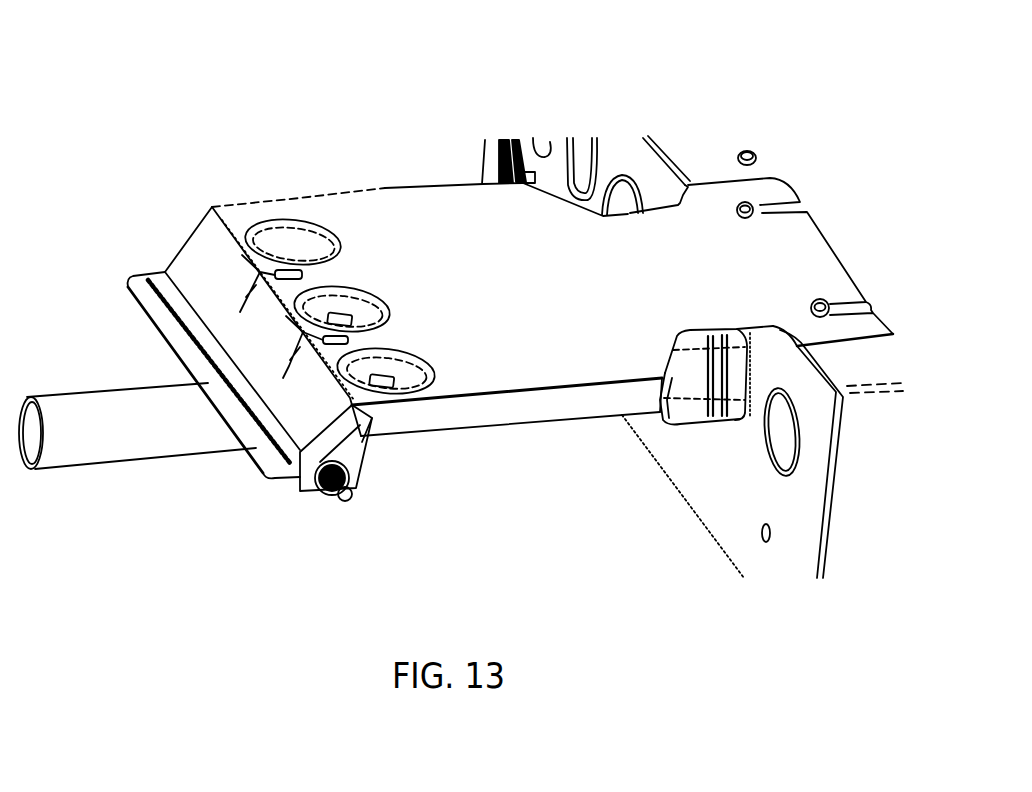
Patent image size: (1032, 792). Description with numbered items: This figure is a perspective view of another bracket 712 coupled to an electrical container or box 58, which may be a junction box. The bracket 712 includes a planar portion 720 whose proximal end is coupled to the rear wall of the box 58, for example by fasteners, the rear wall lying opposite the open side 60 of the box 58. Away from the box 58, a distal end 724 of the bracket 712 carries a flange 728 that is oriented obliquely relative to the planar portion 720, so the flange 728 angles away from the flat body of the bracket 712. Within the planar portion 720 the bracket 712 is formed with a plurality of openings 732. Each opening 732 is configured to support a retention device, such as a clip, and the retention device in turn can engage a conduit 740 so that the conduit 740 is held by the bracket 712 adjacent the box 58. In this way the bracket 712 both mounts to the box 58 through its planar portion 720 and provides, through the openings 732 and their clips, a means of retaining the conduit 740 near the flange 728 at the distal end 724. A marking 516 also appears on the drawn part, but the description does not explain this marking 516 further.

The bracket 712 is at (328, 121).
The planar portion 720 is at (691, 220).
The flange 728 is at (200, 290).
The distal end 724 is at (241, 473).
The openings 732 is at (395, 372).
The marking 516 is at (297, 258).
The conduit 740 is at (475, 418).
The box 58 is at (681, 489).
The open side 60 is at (872, 372).